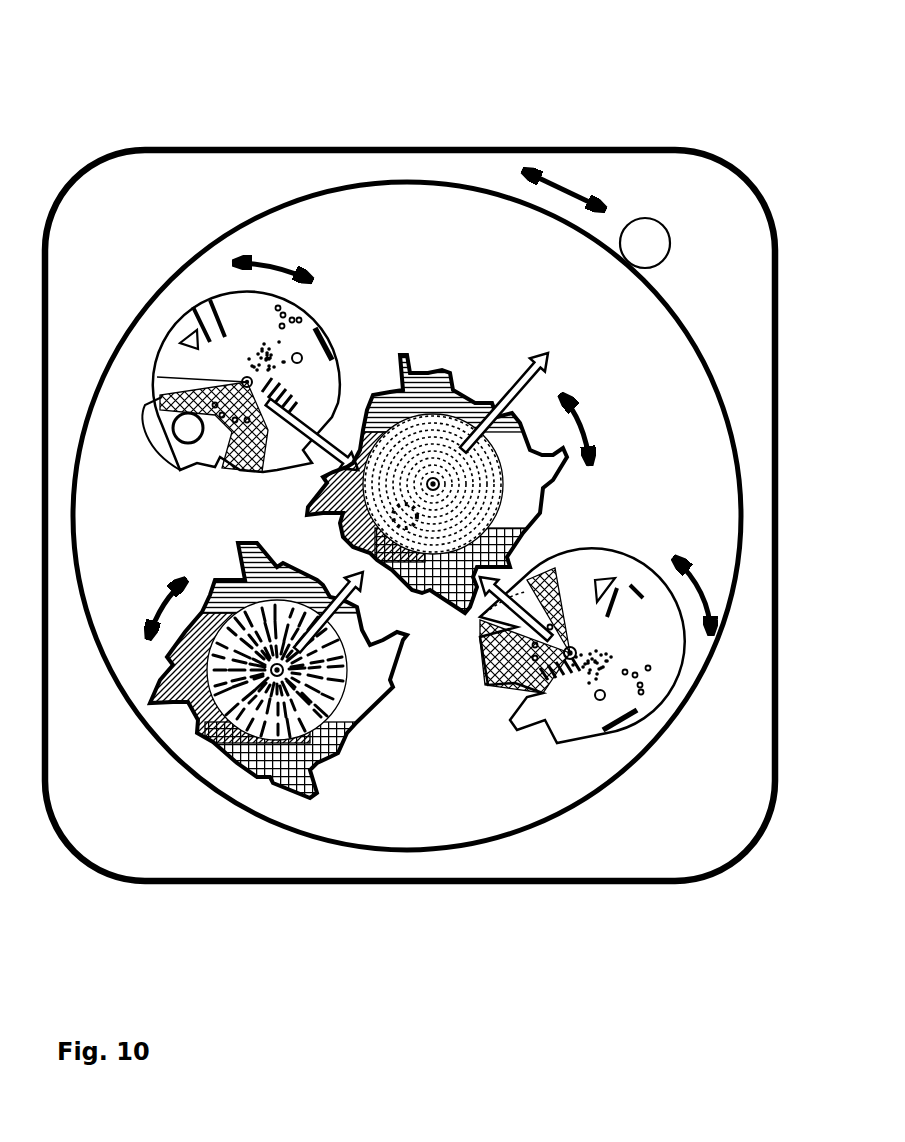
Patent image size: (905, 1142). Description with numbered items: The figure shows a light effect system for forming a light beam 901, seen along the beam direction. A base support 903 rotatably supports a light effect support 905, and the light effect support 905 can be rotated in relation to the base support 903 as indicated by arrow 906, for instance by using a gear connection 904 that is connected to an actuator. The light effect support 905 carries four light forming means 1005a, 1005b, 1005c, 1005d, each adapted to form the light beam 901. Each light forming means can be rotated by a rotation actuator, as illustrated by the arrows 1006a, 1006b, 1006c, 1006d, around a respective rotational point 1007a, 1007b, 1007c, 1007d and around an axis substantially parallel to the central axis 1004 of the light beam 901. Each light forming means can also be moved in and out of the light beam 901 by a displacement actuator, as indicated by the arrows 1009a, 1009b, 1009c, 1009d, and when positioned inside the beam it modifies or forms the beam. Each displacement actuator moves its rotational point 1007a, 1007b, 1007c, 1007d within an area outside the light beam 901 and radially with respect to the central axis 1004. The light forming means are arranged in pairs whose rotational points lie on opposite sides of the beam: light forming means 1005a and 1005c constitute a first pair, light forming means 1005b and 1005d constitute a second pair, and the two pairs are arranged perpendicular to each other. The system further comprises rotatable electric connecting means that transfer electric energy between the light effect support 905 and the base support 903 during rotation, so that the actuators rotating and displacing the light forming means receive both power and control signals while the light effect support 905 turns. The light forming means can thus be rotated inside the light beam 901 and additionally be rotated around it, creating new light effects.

The light beam 901 is at (413, 527).
The base support 903 is at (162, 147).
The gear connection 904 is at (645, 243).
The light effect support 905 is at (263, 214).
The arrow indicating rotation of light effect support 906 is at (532, 160).
The central axis 1004 is at (590, 478).
The light forming means 1005a is at (314, 325).
The light forming means 1005b is at (325, 765).
The light forming means 1005c is at (585, 742).
The light forming means 1005d is at (452, 377).
The arrow indicating rotation of light forming means 1006a is at (272, 266).
The arrow indicating rotation of light forming means 1006b is at (181, 572).
The arrow indicating rotation of light forming means 1006c is at (690, 550).
The arrow indicating rotation of light forming means 1006d is at (572, 404).
The rotational point 1007a is at (170, 440).
The rotational point 1007b is at (282, 674).
The rotational point 1007c is at (574, 657).
The rotational point 1007d is at (434, 482).
The arrow indicating displacement of light forming means 1009a is at (312, 470).
The arrow indicating displacement of light forming means 1009b is at (372, 602).
The arrow indicating displacement of light forming means 1009c is at (515, 582).
The arrow indicating displacement of light forming means 1009d is at (512, 376).